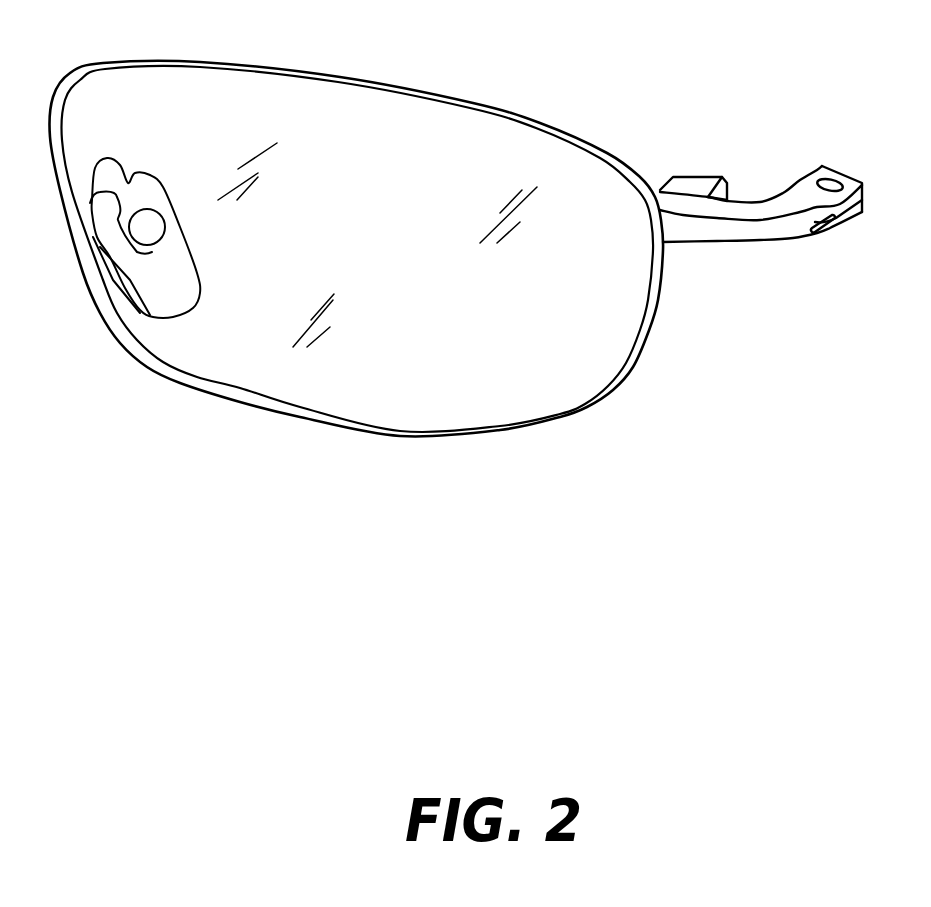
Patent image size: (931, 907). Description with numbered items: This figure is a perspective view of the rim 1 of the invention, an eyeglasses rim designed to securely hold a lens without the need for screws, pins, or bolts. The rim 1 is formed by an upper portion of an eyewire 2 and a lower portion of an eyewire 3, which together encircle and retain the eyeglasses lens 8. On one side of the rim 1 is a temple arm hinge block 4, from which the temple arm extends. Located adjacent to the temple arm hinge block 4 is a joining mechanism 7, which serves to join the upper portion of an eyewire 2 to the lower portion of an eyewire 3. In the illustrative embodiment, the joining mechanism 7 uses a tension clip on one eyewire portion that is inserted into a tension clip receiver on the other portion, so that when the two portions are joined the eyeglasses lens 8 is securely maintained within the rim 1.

The rim 1 is at (248, 458).
The upper portion of an eyewire 2 is at (470, 97).
The lower portion of an eyewire 3 is at (217, 388).
The temple arm hinge block 4 is at (848, 233).
The joining mechanism 7 is at (683, 252).
The eyeglasses lens 8 is at (555, 402).